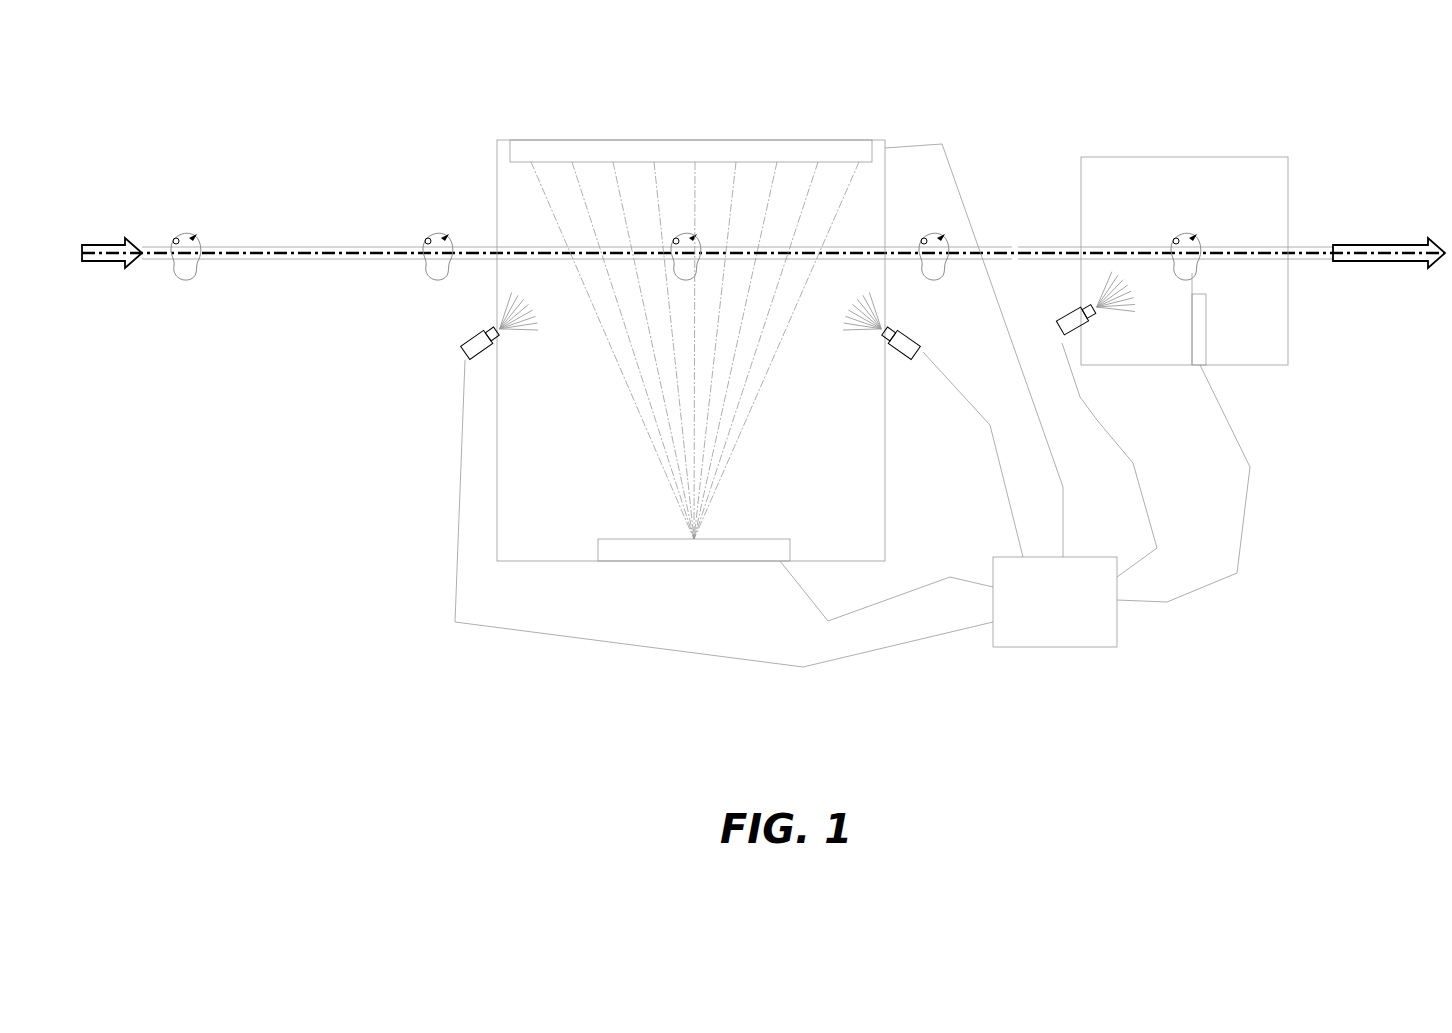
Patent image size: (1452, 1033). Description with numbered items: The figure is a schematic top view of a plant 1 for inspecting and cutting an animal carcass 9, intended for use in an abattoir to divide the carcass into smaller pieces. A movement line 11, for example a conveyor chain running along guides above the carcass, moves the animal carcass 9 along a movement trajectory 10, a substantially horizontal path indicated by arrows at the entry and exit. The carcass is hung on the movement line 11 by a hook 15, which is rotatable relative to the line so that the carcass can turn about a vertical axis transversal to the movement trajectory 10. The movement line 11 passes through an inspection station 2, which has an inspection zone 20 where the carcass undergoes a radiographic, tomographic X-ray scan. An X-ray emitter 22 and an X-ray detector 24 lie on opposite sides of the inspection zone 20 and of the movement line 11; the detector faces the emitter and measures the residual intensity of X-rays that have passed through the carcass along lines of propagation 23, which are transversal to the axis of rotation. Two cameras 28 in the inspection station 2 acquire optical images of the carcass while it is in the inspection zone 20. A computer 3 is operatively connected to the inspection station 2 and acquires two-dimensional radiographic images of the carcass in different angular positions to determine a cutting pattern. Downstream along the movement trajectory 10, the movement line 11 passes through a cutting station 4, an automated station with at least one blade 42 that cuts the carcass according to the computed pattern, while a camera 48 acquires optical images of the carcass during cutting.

The plant for inspecting and cutting an animal carcass 1 is at (355, 690).
The inspection station 2 is at (892, 126).
The computer 3 is at (1062, 632).
The cutting station 4 is at (1248, 150).
The animal carcass 9 is at (200, 268).
The movement trajectory 10 is at (112, 250).
The movement line 11 is at (287, 248).
The hook 15 is at (183, 252).
The inspection zone 20 is at (602, 196).
The X-ray emitter 22 is at (647, 548).
The lines of propagation 23 is at (627, 228).
The X-ray detector 24 is at (702, 150).
The camera 28 is at (473, 347).
The blade 42 is at (1193, 283).
The camera 48 is at (1070, 325).